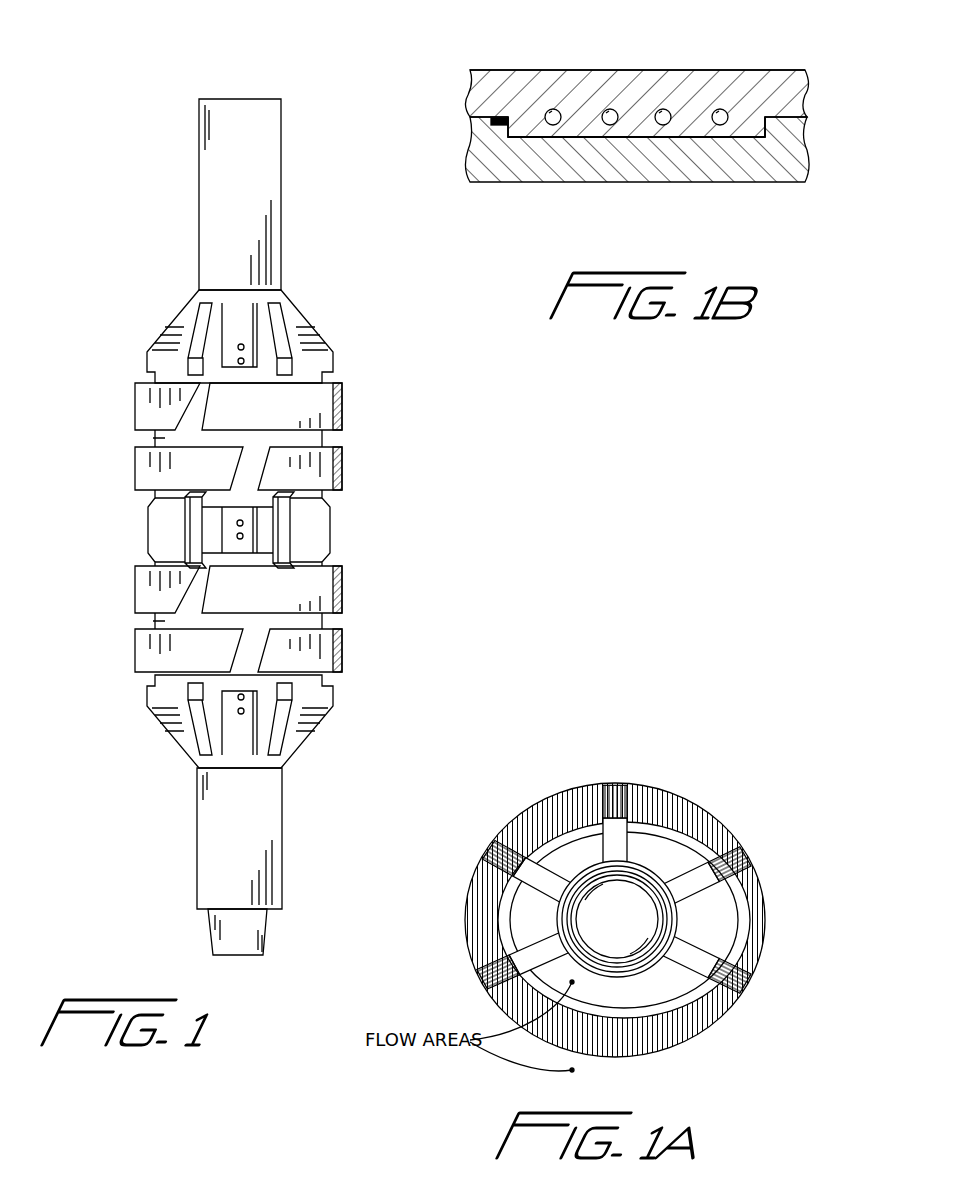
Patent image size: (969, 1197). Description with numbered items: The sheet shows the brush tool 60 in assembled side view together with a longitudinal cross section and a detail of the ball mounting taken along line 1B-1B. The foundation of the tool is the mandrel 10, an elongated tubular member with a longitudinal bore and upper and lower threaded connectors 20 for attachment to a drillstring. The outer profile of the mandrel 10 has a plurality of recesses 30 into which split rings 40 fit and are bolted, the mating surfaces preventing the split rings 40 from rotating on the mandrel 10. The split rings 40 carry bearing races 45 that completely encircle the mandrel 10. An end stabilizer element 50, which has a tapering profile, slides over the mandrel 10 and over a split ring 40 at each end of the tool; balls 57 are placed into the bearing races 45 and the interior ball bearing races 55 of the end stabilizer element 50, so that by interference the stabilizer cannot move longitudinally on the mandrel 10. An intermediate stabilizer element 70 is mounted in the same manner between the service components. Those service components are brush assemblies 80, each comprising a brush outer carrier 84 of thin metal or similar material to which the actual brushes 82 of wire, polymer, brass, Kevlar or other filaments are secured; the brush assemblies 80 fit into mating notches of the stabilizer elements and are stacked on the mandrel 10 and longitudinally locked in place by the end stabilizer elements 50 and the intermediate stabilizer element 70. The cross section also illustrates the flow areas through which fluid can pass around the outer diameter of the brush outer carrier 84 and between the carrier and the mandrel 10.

In FIG. 1, the mandrel 10 is at (274, 170).
In FIG. 1B, the mandrel 10 is at (487, 150).
In FIG. 1A, the mandrel 10 is at (647, 955).
In FIG. 1, the threaded connectors 20 is at (254, 97).
In FIG. 1B, the recesses 30 is at (537, 112).
In FIG. 1B, the split rings 40 is at (762, 128).
In FIG. 1B, the bearing races 45 is at (760, 128).
In FIG. 1, the end stabilizer element 50 is at (307, 348).
In FIG. 1B, the end stabilizer element 50 is at (770, 70).
In FIG. 1A, the end stabilizer element 50 is at (612, 800).
In FIG. 1B, the interior ball bearing races 55 is at (556, 110).
In FIG. 1B, the balls 57 is at (717, 125).
In FIG. 1, the brush tool 60 is at (260, 505).
In FIG. 1, the intermediate stabilizer element 70 is at (332, 535).
In FIG. 1, the brush assemblies 80 is at (260, 533).
In FIG. 1, the brushes 82 is at (343, 405).
In FIG. 1A, the brushes 82 is at (705, 825).
In FIG. 1, the brush outer carriers 84 is at (155, 440).
In FIG. 1A, the brush outer carriers 84 is at (670, 822).
In FIG. 1A, the section line 1B- 1B is at (739, 769).